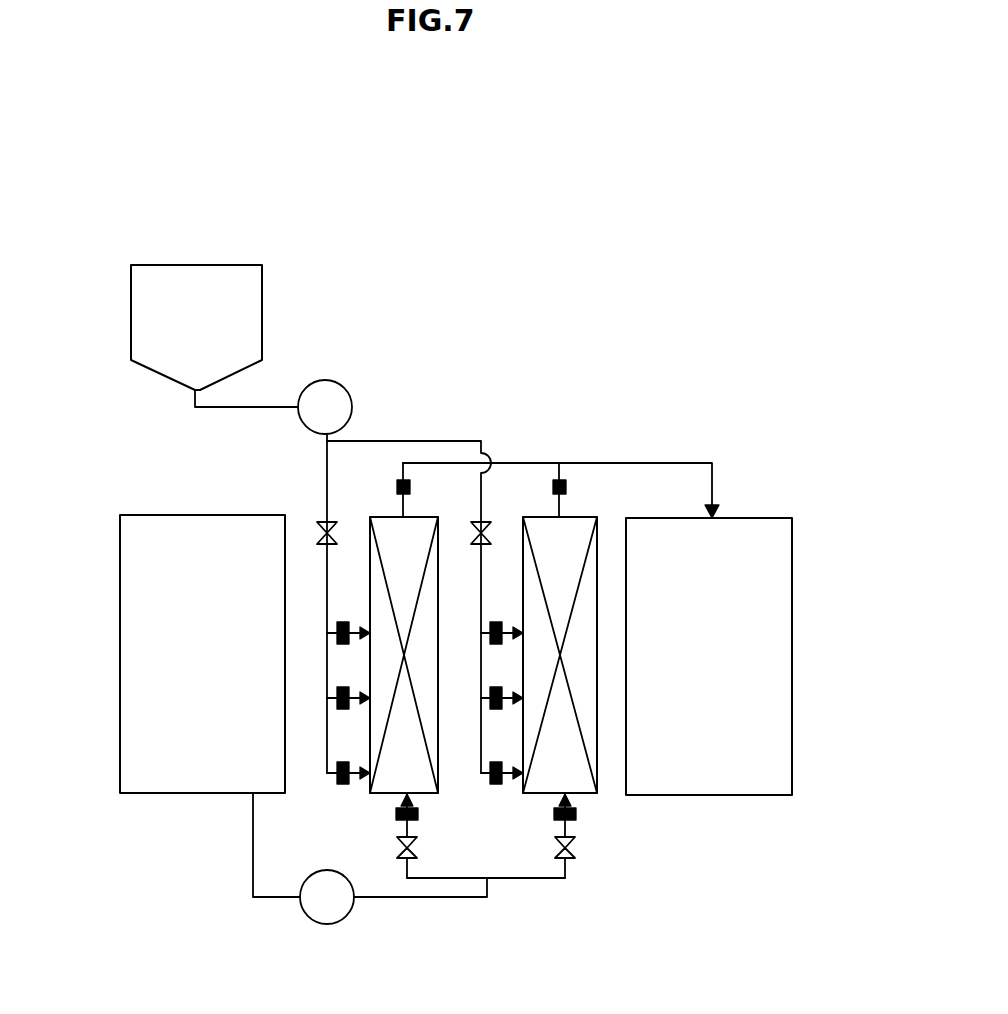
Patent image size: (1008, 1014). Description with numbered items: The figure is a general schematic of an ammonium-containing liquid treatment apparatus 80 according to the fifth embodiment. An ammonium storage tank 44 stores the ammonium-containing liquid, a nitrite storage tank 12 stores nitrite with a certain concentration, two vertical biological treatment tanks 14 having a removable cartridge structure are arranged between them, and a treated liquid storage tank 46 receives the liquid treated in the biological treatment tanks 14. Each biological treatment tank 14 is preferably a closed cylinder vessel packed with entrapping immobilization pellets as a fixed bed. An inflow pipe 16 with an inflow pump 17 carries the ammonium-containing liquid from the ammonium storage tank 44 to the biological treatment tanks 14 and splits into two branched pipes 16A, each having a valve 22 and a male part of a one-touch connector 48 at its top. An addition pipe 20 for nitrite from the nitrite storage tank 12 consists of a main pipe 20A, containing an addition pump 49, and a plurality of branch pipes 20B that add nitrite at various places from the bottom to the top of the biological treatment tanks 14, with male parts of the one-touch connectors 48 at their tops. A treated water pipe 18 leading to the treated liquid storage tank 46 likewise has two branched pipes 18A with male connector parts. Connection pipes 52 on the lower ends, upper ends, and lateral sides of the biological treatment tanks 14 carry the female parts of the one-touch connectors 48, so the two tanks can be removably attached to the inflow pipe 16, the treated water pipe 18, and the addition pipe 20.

The nitrite storage tank 12 is at (262, 303).
The addition pipe 20 is at (290, 389).
The addition pump 49 is at (346, 397).
The main pipe 20A is at (327, 462).
The branch pipes 20B is at (330, 650).
The branched treated water pipes 18A is at (403, 463).
The treated water pipe 18 is at (668, 462).
The ammonium-containing liquid treatment apparatus 80 is at (688, 378).
The ammonium storage tank 44 is at (120, 586).
The treated liquid storage tank 46 is at (792, 588).
The biological treatment tank 14 is at (383, 793).
The one-touch connectors 48 is at (397, 487).
The connection pipes 52 is at (405, 508).
The valves 22 is at (417, 840).
The branched inflow pipes 16A is at (405, 867).
The inflow pipe 16 is at (412, 900).
The inflow pump 17 is at (327, 924).